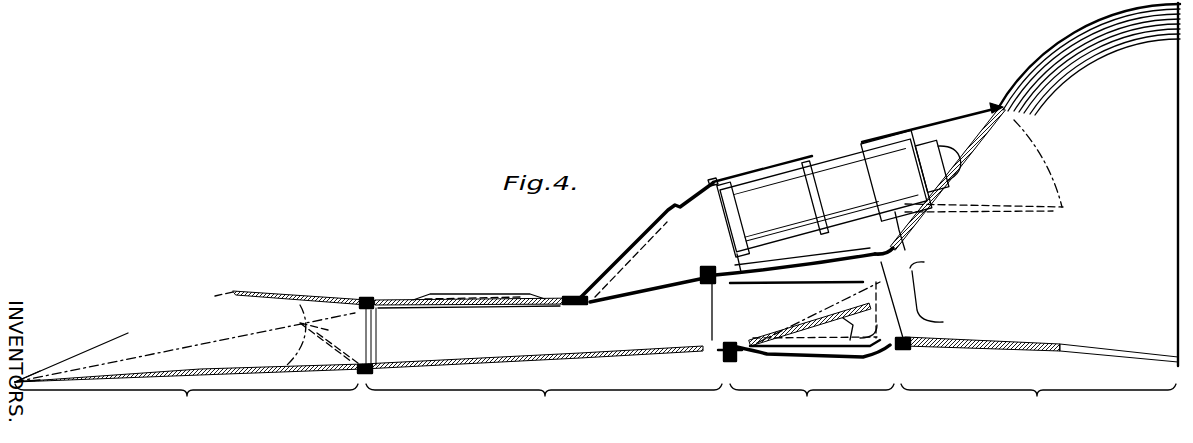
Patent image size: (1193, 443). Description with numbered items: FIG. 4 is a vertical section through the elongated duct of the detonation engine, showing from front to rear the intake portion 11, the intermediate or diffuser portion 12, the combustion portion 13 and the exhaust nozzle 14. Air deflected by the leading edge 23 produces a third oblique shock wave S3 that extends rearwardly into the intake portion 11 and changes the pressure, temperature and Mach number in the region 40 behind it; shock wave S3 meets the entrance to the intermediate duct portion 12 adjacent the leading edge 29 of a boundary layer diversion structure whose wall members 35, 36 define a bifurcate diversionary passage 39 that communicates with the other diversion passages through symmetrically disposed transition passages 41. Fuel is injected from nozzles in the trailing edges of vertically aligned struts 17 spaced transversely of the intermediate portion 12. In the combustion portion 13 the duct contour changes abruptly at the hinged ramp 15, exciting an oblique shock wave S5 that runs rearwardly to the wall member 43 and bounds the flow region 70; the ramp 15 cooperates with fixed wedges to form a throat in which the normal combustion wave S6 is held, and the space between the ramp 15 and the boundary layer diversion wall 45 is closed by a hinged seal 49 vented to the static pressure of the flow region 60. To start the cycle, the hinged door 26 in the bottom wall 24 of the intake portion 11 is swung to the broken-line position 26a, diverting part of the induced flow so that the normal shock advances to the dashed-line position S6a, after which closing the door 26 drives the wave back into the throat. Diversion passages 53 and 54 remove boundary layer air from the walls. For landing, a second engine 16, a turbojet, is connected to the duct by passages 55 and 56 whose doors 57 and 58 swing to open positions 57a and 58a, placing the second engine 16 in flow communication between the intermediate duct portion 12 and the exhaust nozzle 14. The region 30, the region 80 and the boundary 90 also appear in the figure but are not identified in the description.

The intake portion 11 is at (186, 403).
The intermediate or diffuser portion 12 is at (544, 403).
The combustion portion 13 is at (812, 403).
The exhaust nozzle 14 is at (1038, 403).
The hinged ramp 15 is at (830, 307).
The second engine 16 is at (838, 158).
The struts 17 is at (378, 345).
The leading edge 23 is at (16, 378).
The bottom wall 24 is at (228, 367).
The hinged door 26 is at (318, 373).
The angularly displaced door position 26a is at (333, 343).
The leading edge of second boundary layer diversion structure 29 is at (355, 300).
The upper surface line 30 is at (120, 346).
The wall member 35 is at (384, 311).
The wall member 36 is at (386, 300).
The diversionary passage 39 is at (368, 297).
The region 40 is at (244, 328).
The transition passages 41 is at (470, 295).
The wall member 43 is at (800, 285).
The boundary layer diversion wall 45 is at (830, 350).
The hinged seal 49 is at (858, 342).
The diversion passage 53 is at (822, 272).
The diversion passage 54 is at (787, 352).
The passage 55 is at (700, 207).
The passage 56 is at (955, 125).
The door 57 is at (678, 282).
The open position of door 57a is at (664, 232).
The door 58 is at (985, 150).
The open position of door 58a is at (992, 203).
The flow region 60 is at (732, 311).
The flow region 70 is at (815, 310).
The exhaust region 80 is at (1041, 316).
The trailing edge 90 is at (1170, 174).
The third oblique shock wave S3 is at (190, 347).
The oblique shock wave S5 is at (792, 305).
The normal wave S6 is at (912, 299).
The advanced normal shock wave position S6a is at (299, 308).